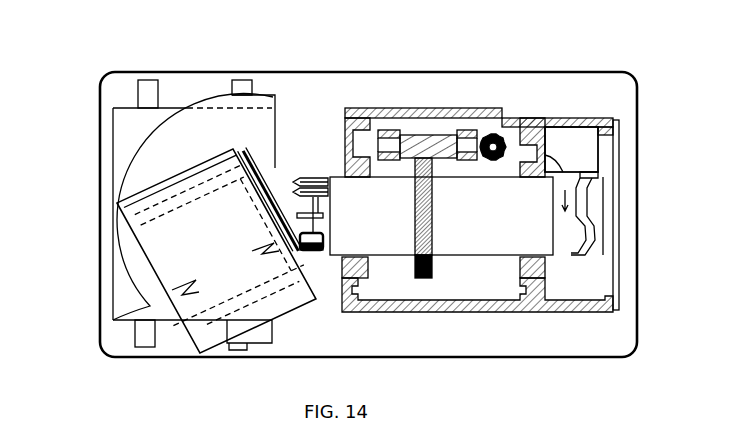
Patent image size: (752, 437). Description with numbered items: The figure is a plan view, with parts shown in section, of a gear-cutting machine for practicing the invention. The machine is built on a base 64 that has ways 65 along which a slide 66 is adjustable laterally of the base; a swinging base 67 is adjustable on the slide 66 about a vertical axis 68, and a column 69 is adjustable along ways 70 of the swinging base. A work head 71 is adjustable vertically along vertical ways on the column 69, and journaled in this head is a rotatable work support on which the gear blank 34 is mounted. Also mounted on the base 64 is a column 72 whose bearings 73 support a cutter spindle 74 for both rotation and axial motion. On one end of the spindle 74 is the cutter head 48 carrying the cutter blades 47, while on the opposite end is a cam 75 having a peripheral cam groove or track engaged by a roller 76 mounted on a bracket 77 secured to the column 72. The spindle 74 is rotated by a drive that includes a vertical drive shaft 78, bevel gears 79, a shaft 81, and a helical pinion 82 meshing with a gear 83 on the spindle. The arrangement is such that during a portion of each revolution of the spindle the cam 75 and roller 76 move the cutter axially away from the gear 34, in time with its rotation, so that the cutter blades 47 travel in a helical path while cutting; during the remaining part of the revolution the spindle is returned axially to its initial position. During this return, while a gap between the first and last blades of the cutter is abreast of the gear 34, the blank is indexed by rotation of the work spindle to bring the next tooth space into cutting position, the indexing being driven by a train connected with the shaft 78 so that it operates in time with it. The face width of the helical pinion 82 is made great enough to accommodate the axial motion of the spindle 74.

The gear blank 34 is at (247, 222).
The cutter blades 47 is at (312, 180).
The cutter head 48 is at (310, 252).
The base 64 is at (310, 117).
The ways 65 is at (235, 85).
The slide 66 is at (122, 143).
The swinging base 67 is at (135, 257).
The vertical axis 68 is at (217, 226).
The column 69 is at (241, 301).
The ways 70 is at (112, 225).
The work head 71 is at (217, 241).
The column 72 is at (450, 305).
The bearings 73 is at (368, 268).
The cutter spindle 74 is at (483, 248).
The cam 75 is at (590, 210).
The roller 76 is at (598, 178).
The bracket 77 is at (575, 140).
The vertical drive shaft 78 is at (498, 120).
The bevel gears 79 is at (490, 160).
The shaft 81 is at (467, 150).
The helical pinion 82 is at (432, 140).
The gear 83 is at (414, 232).